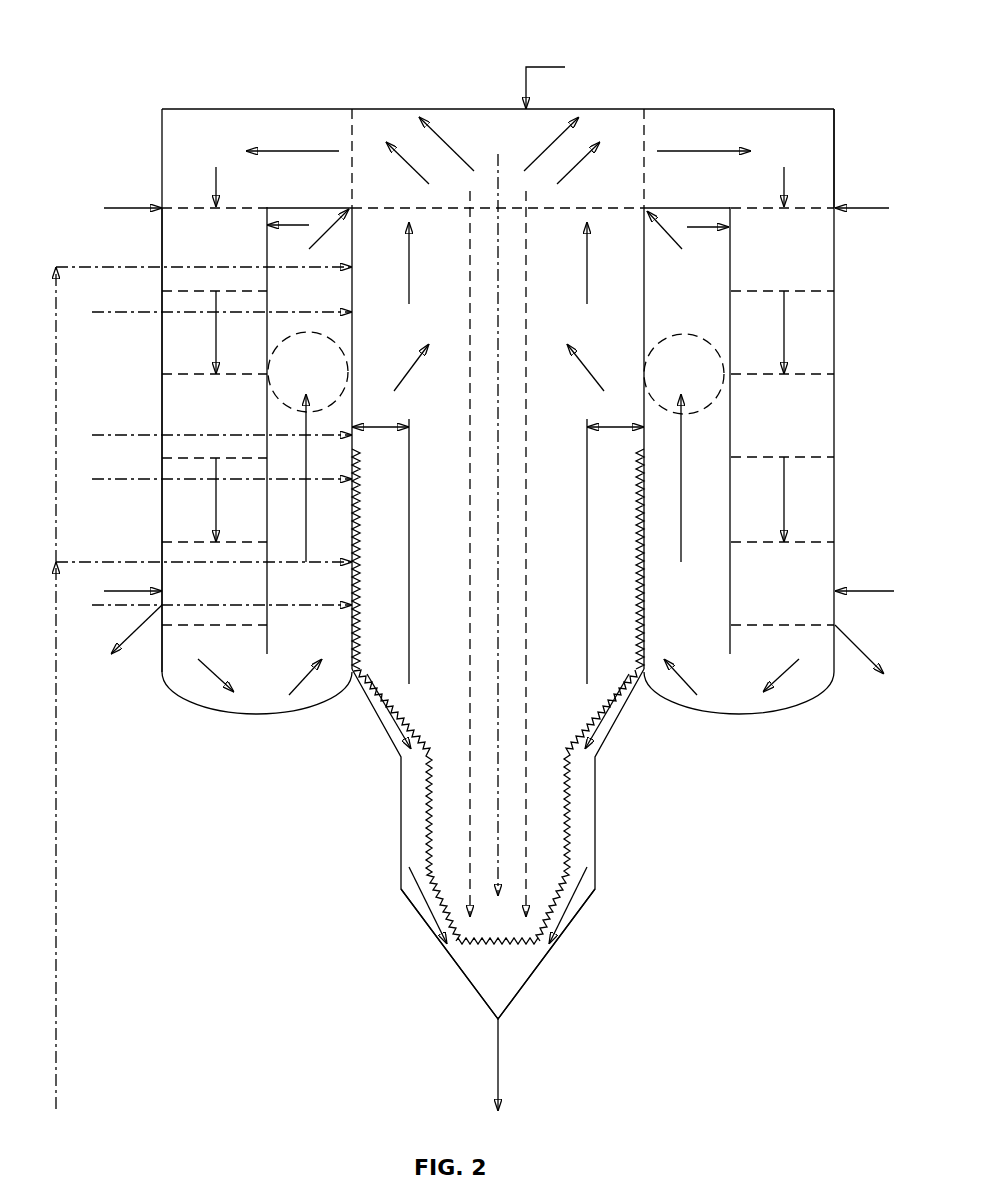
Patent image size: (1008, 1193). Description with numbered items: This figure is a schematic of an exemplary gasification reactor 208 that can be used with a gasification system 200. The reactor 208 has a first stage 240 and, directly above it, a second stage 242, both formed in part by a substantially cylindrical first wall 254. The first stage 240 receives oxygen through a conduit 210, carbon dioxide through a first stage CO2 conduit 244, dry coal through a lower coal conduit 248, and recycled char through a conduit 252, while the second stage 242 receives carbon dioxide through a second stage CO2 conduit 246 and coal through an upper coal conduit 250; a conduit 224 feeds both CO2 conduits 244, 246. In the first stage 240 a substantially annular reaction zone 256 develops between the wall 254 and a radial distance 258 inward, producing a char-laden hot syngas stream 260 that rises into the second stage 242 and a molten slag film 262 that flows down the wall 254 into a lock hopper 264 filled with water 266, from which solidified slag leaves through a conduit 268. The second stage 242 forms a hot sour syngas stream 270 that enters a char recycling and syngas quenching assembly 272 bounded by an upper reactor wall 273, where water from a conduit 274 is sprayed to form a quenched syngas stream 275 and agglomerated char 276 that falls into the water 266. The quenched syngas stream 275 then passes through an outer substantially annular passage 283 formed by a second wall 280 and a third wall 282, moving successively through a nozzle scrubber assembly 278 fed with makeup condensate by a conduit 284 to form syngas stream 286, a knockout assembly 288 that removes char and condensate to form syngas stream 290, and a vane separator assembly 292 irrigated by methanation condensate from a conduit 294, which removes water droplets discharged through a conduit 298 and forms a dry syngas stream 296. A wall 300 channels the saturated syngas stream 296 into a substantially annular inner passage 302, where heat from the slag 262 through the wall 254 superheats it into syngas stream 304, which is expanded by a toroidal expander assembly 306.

The gasification system 200 is at (132, 42).
The gasification reactor 208 is at (228, 100).
The conduit 210 is at (130, 606).
The conduit 224 is at (58, 905).
The first stage 240 is at (461, 643).
The second stage 242 is at (641, 246).
The first stage CO2 conduit 244 is at (130, 563).
The second stage CO2 conduit 246 is at (130, 268).
The lower coal conduit 248 is at (130, 436).
The upper coal conduit 250 is at (128, 313).
The conduit 252 is at (130, 480).
The first wall 254 is at (353, 300).
The annular reaction zone 256 is at (405, 528).
The radial distance 258 is at (380, 432).
The syngas stream 260 is at (410, 385).
The molten slag film 262 is at (362, 560).
The lock hopper 264 is at (535, 985).
The water 266 is at (518, 985).
The conduit 268 is at (500, 1060).
The syngas stream 270 is at (553, 145).
The char recycling and syngas quenching assembly 272 is at (517, 141).
The upper reactor wall 273 is at (397, 109).
The conduit 274 is at (330, 240).
The quenched syngas stream 275 is at (303, 152).
The agglomerated char 276 is at (500, 195).
The nozzle scrubber assembly 278 is at (230, 241).
The second wall 280 is at (268, 405).
The third wall 282 is at (163, 150).
The outer substantially annular passage 283 is at (837, 138).
The conduit 284 is at (556, 68).
The syngas stream 286 is at (217, 323).
The knockout assembly 288 is at (236, 431).
The syngas stream 290 is at (217, 500).
The vane separator assembly 292 is at (231, 595).
The conduit 294 is at (130, 592).
The syngas stream 296 is at (210, 680).
The conduit 298 is at (145, 640).
The wall 300 is at (268, 718).
The substantially annular inner passage 302 is at (351, 513).
The syngas stream 304 is at (307, 518).
The expander assembly 306 is at (330, 385).